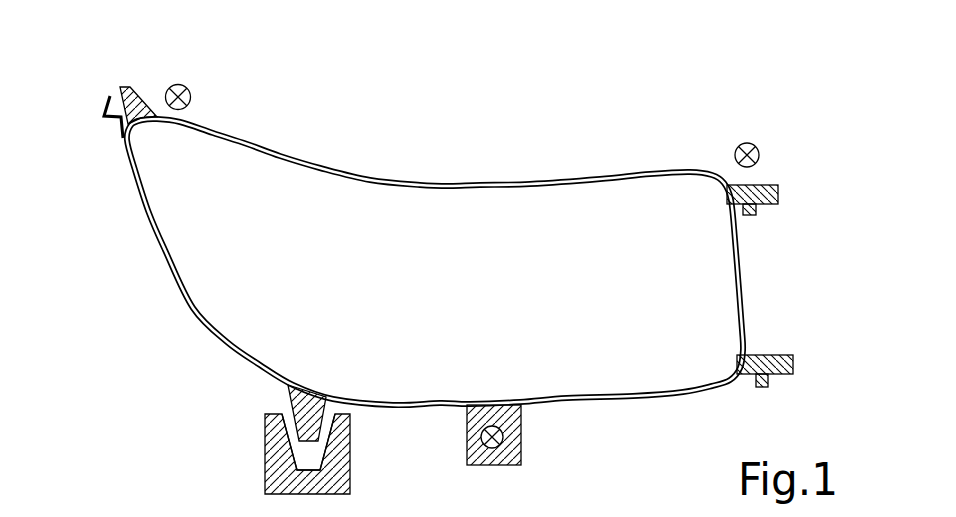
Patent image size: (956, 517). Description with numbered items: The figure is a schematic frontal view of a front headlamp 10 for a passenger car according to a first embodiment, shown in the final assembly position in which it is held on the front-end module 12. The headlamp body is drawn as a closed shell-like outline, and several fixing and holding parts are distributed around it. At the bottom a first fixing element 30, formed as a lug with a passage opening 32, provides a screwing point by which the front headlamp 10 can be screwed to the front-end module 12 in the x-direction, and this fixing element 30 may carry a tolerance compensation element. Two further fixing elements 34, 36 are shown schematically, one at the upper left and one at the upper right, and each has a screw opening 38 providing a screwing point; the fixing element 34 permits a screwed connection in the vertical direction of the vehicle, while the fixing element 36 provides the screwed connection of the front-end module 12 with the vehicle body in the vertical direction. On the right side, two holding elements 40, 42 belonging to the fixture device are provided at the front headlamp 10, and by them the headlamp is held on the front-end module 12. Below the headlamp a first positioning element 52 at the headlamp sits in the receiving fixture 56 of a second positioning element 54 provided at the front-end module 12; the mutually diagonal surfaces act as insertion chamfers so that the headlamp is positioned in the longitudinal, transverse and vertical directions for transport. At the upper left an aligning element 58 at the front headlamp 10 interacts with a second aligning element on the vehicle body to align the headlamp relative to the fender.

The front headlamp 10 is at (688, 165).
The front-end module 12 is at (465, 513).
The first fixing element 30 is at (521, 455).
The passage opening 32 is at (512, 434).
The fixing element 34 is at (191, 96).
The fixing element 36 is at (759, 155).
The screw opening 38 is at (180, 82).
The holding element 40 is at (770, 205).
The holding element 42 is at (767, 354).
The first positioning element 52 is at (288, 403).
The second positioning element 54 is at (265, 470).
The receiving fixture 56 is at (329, 453).
The aligning element 58 is at (128, 86).